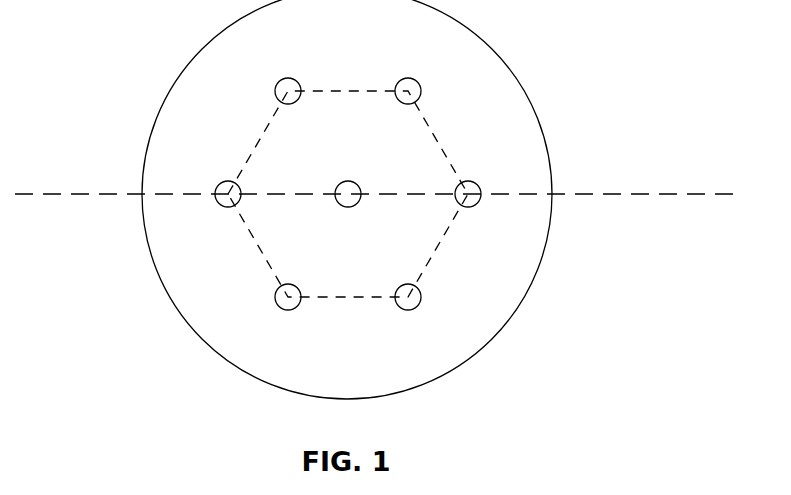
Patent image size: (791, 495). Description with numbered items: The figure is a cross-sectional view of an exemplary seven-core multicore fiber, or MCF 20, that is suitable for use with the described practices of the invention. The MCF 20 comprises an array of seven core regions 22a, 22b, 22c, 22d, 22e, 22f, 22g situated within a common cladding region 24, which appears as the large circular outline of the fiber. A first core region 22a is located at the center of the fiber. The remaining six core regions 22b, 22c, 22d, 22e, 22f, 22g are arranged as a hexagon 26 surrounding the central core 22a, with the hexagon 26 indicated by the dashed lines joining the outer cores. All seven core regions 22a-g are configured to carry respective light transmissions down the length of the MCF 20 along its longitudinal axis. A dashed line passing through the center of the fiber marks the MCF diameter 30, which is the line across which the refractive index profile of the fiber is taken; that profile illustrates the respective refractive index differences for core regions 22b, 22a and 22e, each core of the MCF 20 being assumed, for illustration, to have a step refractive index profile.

The multicore fiber 20 is at (179, 49).
The first core region 22a is at (366, 176).
The core region 22b is at (199, 176).
The core region 22c is at (271, 76).
The core region 22d is at (392, 76).
The core region 22e is at (464, 178).
The core region 22f is at (418, 281).
The core region 22g is at (318, 281).
The common cladding region 24 is at (472, 281).
The hexagon 26 is at (438, 138).
The MCF diameter 30 is at (43, 188).